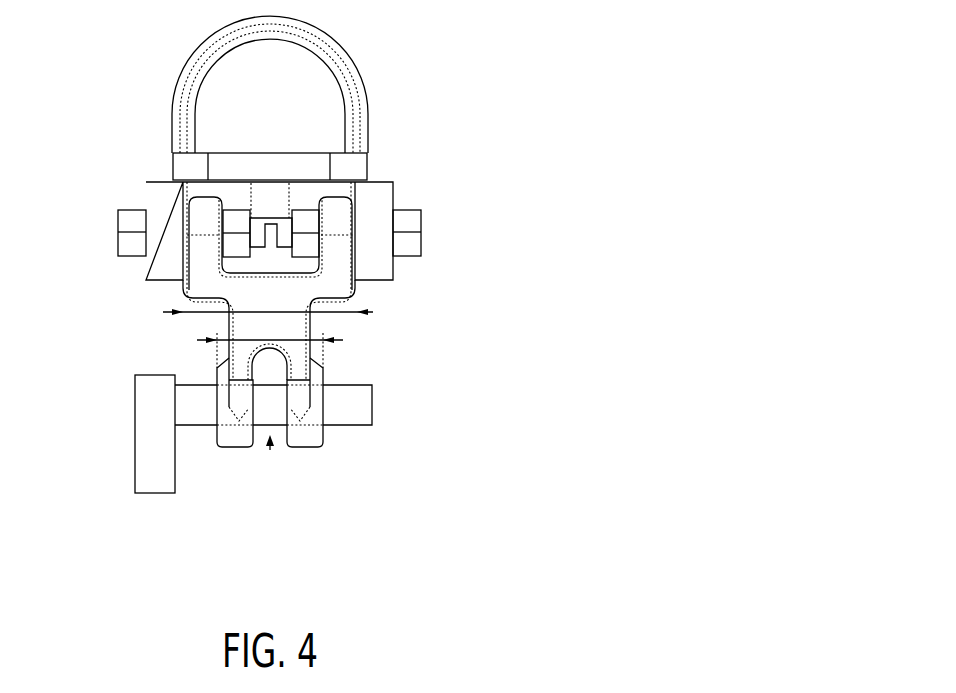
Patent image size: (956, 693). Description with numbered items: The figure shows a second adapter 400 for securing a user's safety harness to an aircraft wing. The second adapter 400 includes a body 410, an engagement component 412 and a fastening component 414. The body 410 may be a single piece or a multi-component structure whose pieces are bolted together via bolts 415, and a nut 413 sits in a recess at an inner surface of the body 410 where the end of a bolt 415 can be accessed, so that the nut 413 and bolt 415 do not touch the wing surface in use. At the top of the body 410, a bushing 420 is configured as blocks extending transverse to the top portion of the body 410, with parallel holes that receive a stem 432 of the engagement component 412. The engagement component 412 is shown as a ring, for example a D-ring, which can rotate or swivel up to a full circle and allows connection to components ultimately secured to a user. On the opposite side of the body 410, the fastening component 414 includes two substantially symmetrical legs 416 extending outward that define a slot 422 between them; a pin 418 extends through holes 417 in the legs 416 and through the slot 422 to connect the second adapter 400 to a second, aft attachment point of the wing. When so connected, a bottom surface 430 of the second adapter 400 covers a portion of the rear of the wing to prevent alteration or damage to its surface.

The second adapter 400 is at (345, 305).
The body 410 is at (395, 192).
The engagement component 412 is at (363, 82).
The nut 413 is at (233, 245).
The fastening component 414 is at (288, 471).
The bolts 415 is at (132, 210).
The legs 416 is at (234, 448).
The holes 417 is at (232, 448).
The pin 418 is at (360, 410).
The bushing 420 is at (292, 200).
The slot 422 is at (270, 452).
The bottom surface 430 is at (307, 450).
The stem 432 is at (248, 196).